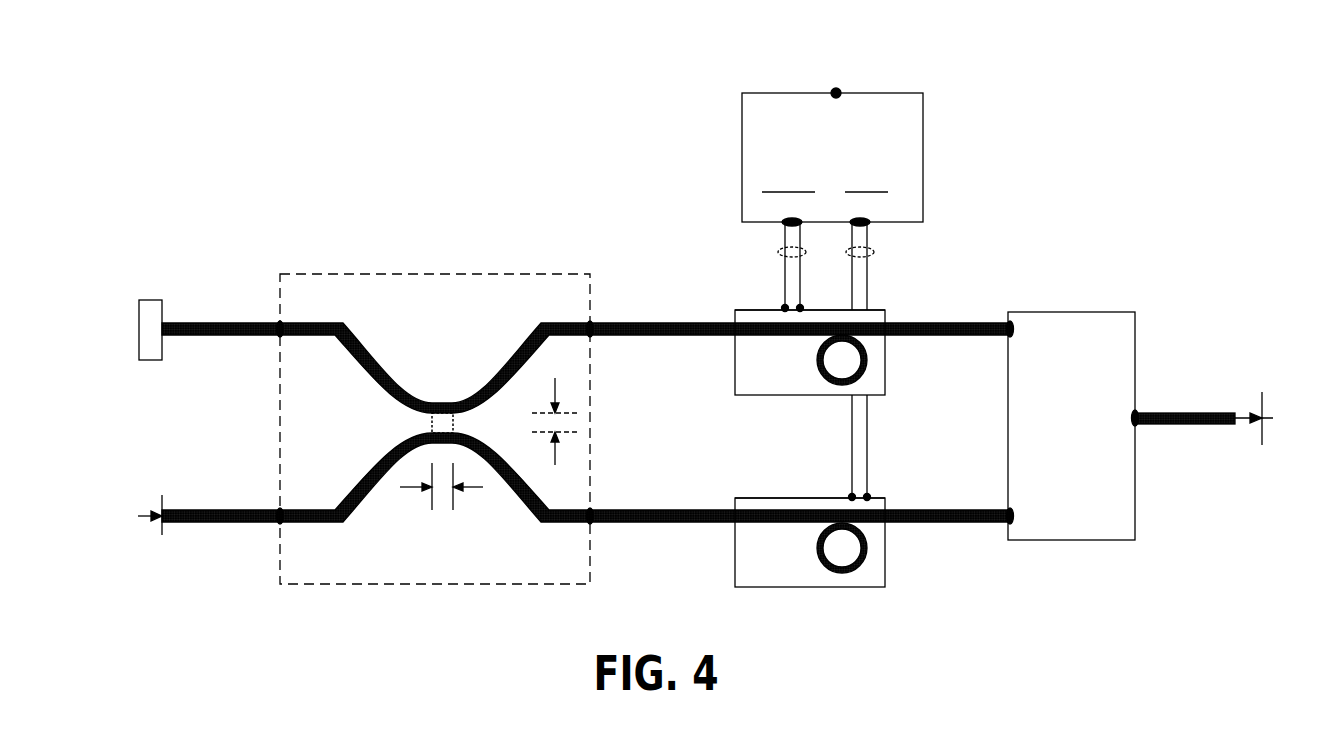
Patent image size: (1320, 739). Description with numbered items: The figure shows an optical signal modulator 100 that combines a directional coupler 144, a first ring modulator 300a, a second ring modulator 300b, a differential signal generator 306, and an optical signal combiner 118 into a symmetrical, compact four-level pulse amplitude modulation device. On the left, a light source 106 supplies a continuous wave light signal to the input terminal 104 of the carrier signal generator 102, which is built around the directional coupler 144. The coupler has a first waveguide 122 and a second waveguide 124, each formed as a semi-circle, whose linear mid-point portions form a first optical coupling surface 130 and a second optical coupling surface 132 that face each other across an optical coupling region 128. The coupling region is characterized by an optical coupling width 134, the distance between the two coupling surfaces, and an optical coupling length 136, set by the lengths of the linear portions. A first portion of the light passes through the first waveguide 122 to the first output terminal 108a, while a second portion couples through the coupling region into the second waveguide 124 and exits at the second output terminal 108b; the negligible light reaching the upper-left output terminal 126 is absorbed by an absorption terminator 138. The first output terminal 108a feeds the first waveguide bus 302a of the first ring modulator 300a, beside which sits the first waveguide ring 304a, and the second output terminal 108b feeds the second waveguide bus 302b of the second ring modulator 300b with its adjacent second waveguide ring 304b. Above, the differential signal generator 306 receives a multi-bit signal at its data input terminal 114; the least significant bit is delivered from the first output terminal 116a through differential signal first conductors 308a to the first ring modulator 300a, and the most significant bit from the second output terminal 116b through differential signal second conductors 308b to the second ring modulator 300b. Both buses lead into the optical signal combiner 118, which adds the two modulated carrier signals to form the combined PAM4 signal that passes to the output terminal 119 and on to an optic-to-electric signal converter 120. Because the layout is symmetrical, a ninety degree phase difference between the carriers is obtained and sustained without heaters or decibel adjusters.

The optical signal modulator 100 is at (333, 128).
The carrier signal generator 102 is at (360, 273).
The input terminal 104 is at (280, 512).
The light source 106 is at (153, 522).
The first output terminal 108a is at (590, 523).
The second output terminal 108b is at (590, 323).
The data input terminal 114 is at (840, 92).
The first output terminal 116a is at (870, 226).
The second output terminal 116b is at (785, 226).
The optical signal combiner 118 is at (1118, 312).
The output terminal 119 is at (1135, 413).
The optic-to-electric signal converter 120 is at (1258, 432).
The first waveguide 122 is at (362, 482).
The second waveguide 124 is at (360, 372).
The output terminal 126 is at (280, 338).
The optical coupling region 128 is at (432, 413).
The first optical coupling surface 130 is at (432, 425).
The second optical coupling surface 132 is at (457, 416).
The optical coupling width 134 is at (568, 428).
The optical coupling length 136 is at (440, 507).
The absorption terminator 138 is at (160, 300).
The directional coupler 144 is at (425, 325).
The first ring modulator 300a is at (885, 572).
The second ring modulator 300b is at (885, 378).
The first waveguide bus 302a is at (772, 510).
The second waveguide bus 302b is at (775, 322).
The first waveguide ring 304a is at (815, 548).
The second waveguide ring 304b is at (815, 357).
The differential signal generator 306 is at (742, 102).
The differential signal first conductors 308a is at (872, 255).
The differential signal second conductors 308b is at (780, 255).